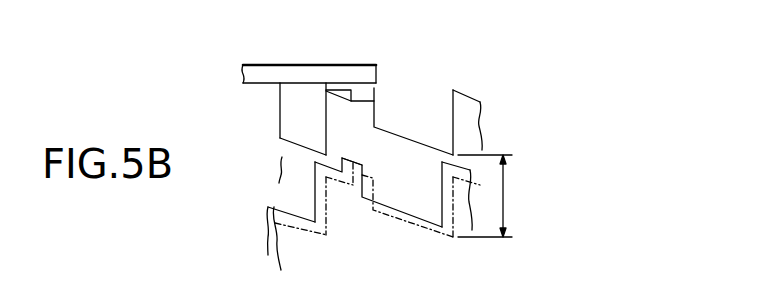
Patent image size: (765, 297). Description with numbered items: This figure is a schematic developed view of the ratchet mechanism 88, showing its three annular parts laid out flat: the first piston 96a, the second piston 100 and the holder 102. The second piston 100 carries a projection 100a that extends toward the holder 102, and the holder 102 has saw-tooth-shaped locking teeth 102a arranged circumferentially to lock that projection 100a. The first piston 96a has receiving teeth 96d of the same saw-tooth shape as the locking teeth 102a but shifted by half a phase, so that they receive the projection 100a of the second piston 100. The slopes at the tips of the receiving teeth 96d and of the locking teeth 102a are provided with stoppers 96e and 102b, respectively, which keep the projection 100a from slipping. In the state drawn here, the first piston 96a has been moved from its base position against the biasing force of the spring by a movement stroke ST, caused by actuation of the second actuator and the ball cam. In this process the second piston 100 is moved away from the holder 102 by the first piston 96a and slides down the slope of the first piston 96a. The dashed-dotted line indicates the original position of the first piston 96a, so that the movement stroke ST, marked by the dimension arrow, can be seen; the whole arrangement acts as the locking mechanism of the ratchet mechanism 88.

The ratchet mechanism 88 is at (486, 70).
The first piston 96a is at (298, 167).
The receiving teeth 96d is at (347, 120).
The stopper 96e is at (358, 100).
The second piston 100 is at (307, 80).
The projection 100a is at (297, 112).
The holder 102 is at (273, 219).
The locking teeth 102a is at (325, 190).
The stopper 102b is at (354, 165).
The movement stroke ST is at (496, 196).